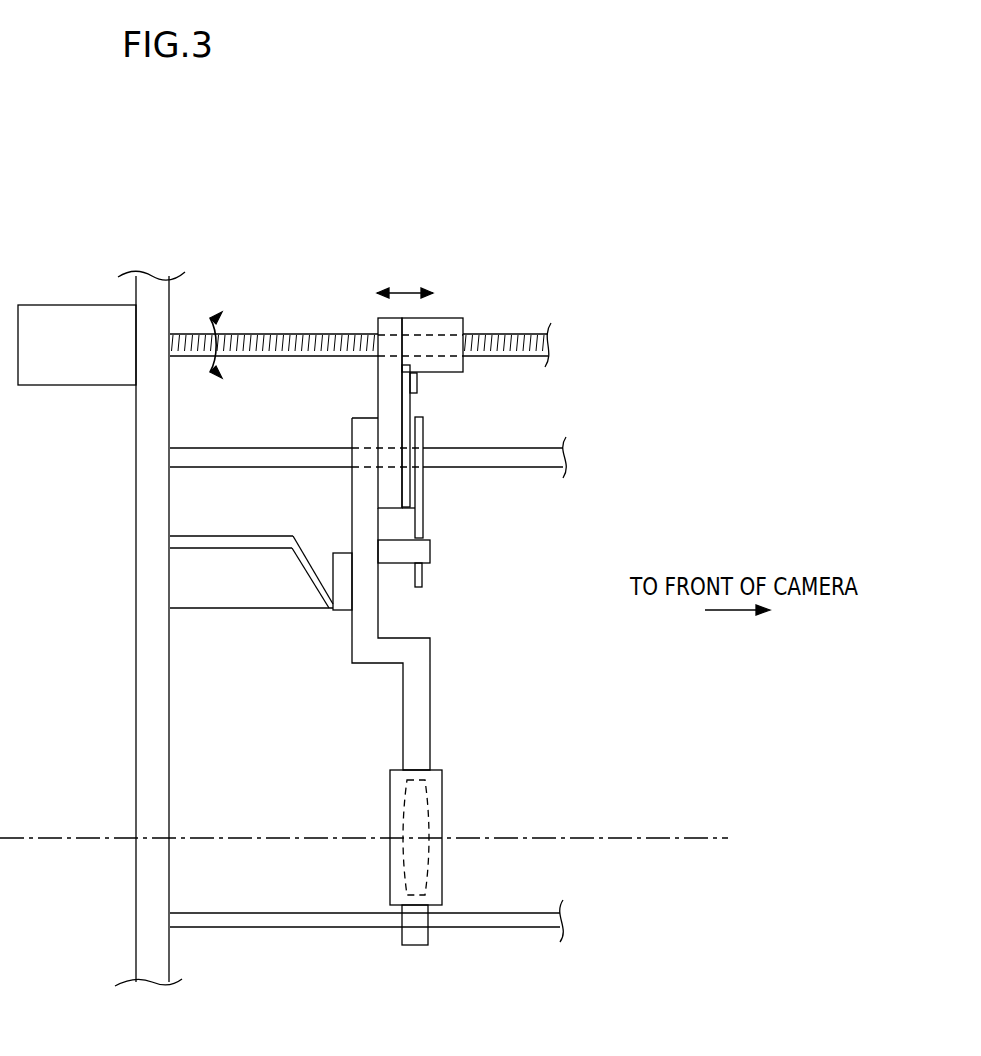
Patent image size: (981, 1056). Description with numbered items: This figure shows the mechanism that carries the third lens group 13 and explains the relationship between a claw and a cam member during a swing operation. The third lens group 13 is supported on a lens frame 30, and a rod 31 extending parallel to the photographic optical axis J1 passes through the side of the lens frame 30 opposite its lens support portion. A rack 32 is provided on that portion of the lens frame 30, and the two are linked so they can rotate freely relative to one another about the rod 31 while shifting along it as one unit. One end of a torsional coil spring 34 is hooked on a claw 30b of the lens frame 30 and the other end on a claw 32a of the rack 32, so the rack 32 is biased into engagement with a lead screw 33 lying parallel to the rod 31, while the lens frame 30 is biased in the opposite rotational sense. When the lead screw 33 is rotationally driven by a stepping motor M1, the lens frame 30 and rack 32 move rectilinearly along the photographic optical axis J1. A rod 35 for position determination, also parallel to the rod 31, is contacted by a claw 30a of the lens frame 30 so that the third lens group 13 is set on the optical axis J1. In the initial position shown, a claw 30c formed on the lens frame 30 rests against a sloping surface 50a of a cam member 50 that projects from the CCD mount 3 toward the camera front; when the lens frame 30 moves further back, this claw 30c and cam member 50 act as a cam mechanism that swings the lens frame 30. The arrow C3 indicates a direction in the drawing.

The CCD mount 3 is at (158, 300).
The stepping motor M1 is at (75, 370).
The lead screw 33 is at (312, 333).
The rack 32 is at (440, 323).
The claw of the rack 32a is at (413, 387).
The torsional coil spring 34 is at (420, 502).
The rod 31 is at (528, 460).
The lens frame 30 is at (420, 692).
The claw of the lens frame 30b is at (423, 552).
The claw 30c is at (343, 588).
The claw 30a is at (412, 933).
The third lens group 13 is at (430, 820).
The rod for position determination 35 is at (512, 920).
The cam member 50 is at (222, 608).
The sloping surface 50a is at (313, 580).
The optical axis of the photographic optical system J1 is at (613, 838).
The arrow C3 is at (233, 740).